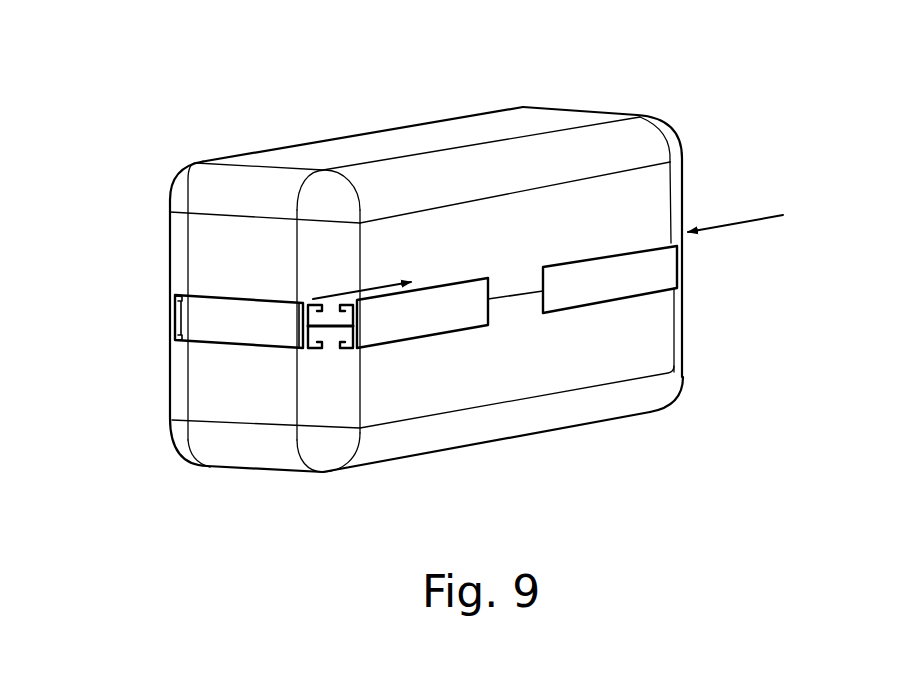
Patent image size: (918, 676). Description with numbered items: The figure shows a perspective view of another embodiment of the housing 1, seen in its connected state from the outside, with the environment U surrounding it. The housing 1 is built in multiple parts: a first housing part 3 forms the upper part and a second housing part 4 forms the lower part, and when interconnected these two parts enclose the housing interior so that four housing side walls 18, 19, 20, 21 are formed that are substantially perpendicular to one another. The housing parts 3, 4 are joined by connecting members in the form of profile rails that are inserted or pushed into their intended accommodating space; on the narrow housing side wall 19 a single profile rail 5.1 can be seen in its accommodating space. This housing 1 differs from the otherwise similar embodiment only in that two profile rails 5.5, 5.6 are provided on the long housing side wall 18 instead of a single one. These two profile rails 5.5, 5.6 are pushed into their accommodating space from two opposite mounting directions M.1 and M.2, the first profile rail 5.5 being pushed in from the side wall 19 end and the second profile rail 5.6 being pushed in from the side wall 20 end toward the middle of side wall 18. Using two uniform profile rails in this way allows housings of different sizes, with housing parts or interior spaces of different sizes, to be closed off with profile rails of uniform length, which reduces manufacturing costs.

The housing 1 is at (429, 279).
The first housing part 3 is at (352, 155).
The second housing part 4 is at (502, 420).
The profile rail 5.1 is at (215, 327).
The profile rail 5.5 is at (428, 310).
The profile rail 5.6 is at (627, 273).
The housing side wall 18 is at (638, 338).
The housing side wall 19 is at (229, 375).
The housing side wall 20 is at (683, 190).
The housing side wall 21 is at (460, 113).
The mounting direction M.1 is at (330, 285).
The mounting direction M.2 is at (745, 209).
The environment U is at (115, 216).